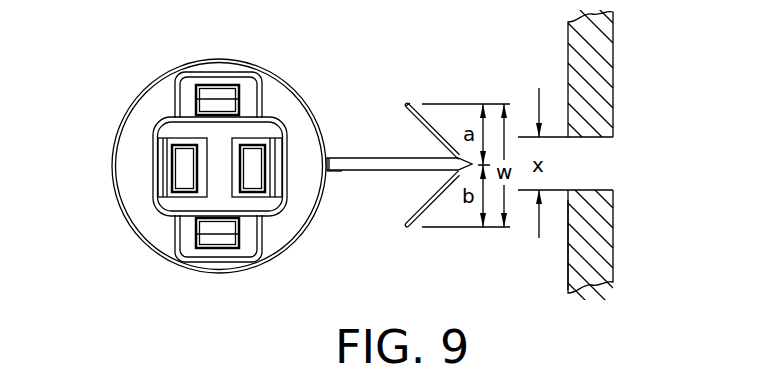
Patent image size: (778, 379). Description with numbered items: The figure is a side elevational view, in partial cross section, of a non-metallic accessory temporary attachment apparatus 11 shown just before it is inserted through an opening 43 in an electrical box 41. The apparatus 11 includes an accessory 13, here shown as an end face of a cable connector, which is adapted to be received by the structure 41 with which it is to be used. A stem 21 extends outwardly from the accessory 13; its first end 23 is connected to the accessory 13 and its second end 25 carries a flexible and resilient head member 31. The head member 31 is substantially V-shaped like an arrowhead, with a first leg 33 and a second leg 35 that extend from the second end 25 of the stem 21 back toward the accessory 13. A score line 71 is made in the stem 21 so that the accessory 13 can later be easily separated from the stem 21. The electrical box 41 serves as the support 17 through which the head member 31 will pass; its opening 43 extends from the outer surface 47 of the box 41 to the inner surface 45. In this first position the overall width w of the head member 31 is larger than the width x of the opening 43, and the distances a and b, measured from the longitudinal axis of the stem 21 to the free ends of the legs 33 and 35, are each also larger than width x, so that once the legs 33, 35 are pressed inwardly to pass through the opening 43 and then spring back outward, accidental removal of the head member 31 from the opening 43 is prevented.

The accessory attachment apparatus 11 is at (182, 195).
The accessory 13 is at (121, 96).
The support 17 is at (621, 164).
The stem 21 is at (392, 152).
The first end of the stem 23 is at (330, 174).
The second end of the stem 25 is at (432, 171).
The flexible and resilient head member 31 is at (420, 89).
The first leg 33 is at (414, 126).
The second leg 35 is at (410, 228).
The structure 41 is at (629, 67).
The opening 43 is at (598, 190).
The inner surface 45 is at (615, 233).
The outer surface 47 is at (568, 250).
The score line 71 is at (341, 172).